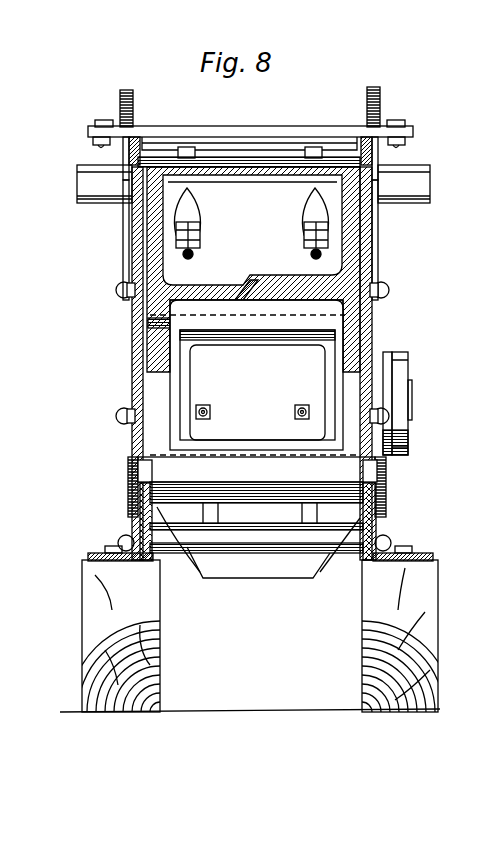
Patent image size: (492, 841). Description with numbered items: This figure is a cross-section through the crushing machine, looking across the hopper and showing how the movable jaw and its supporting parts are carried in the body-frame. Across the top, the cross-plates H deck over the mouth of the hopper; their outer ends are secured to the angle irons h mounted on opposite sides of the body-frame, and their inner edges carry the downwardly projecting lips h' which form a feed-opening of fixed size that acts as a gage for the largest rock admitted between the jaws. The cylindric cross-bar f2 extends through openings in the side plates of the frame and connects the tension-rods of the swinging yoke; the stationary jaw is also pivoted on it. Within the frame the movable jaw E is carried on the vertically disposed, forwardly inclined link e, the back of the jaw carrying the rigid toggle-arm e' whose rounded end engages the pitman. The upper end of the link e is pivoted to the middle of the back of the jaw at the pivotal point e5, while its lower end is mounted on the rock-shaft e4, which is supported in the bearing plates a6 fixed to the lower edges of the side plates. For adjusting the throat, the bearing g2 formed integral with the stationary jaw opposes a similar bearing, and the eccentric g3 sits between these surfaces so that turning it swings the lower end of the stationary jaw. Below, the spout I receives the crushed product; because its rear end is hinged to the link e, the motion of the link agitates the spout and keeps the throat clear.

The section line X is at (120, 98).
The cross-plates H is at (238, 60).
The downwardly projecting lips h' is at (249, 126).
The angle irons h is at (228, 158).
The cylindric cross-bar f2 is at (107, 190).
The movable jaw E is at (358, 217).
The toggle-arm e' is at (265, 256).
The upper pivotal point e5 is at (160, 322).
The link e is at (194, 375).
The bearing g2 is at (412, 392).
The eccentric g3 is at (400, 430).
The rock-shaft e4 is at (138, 470).
The bearing plates a6 is at (200, 574).
The spout I is at (265, 570).